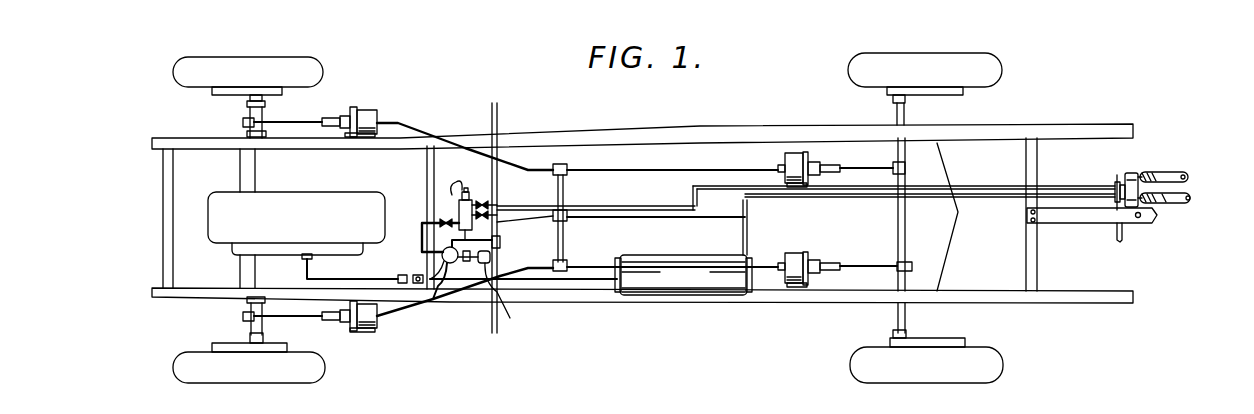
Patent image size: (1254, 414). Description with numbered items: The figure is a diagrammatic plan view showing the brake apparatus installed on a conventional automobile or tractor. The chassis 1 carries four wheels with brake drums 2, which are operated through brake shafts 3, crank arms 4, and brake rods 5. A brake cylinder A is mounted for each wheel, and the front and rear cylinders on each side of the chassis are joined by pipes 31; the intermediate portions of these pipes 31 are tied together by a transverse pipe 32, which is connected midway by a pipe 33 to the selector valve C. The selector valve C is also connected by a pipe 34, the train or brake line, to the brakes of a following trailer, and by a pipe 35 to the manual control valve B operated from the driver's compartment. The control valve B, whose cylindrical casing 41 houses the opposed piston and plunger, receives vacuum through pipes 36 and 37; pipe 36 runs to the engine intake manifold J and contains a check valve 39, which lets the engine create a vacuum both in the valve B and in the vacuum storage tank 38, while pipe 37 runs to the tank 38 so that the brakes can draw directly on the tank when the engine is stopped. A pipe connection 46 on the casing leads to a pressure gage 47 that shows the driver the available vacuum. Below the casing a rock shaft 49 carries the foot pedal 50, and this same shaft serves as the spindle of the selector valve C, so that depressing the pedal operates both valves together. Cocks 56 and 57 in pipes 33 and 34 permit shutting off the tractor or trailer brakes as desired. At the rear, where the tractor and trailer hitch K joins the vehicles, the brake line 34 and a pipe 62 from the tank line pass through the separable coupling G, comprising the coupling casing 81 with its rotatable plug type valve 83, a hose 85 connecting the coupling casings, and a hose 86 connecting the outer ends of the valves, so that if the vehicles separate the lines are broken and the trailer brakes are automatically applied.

The chassis 1 is at (201, 146).
The brake drums 2 is at (212, 348).
The brake shafts 3 is at (251, 326).
The crank arms 4 is at (243, 315).
The brake rods 5 is at (268, 317).
The brake cylinders A is at (372, 78).
The pipes 31 is at (415, 100).
The transverse pipe 32 is at (567, 178).
The pipe 33 is at (567, 218).
The pipe 34 is at (667, 203).
The pipe 35 is at (422, 222).
The pipe 36 is at (303, 265).
The pipe 37 is at (590, 283).
The vacuum storage tank 38 is at (730, 281).
The check valve 39 is at (400, 276).
The cylindrical casing 41 is at (437, 292).
The pipe connection 46 is at (491, 256).
The pressure gage 47 is at (500, 243).
The rock shaft 49 is at (468, 232).
The foot pedal 50 is at (508, 300).
The cock 56 is at (478, 210).
The cock 57 is at (484, 179).
The pipe 62 is at (996, 203).
The coupling casing 81 is at (1120, 180).
The plug type valve 83 is at (1140, 178).
The hose 85 is at (1190, 198).
The hose 86 is at (1188, 177).
The manual control valve B is at (455, 264).
The selector valve C is at (468, 188).
The separable coupling G is at (1136, 174).
The intake manifold J is at (293, 246).
The tractor and trailer hitch K is at (1083, 218).